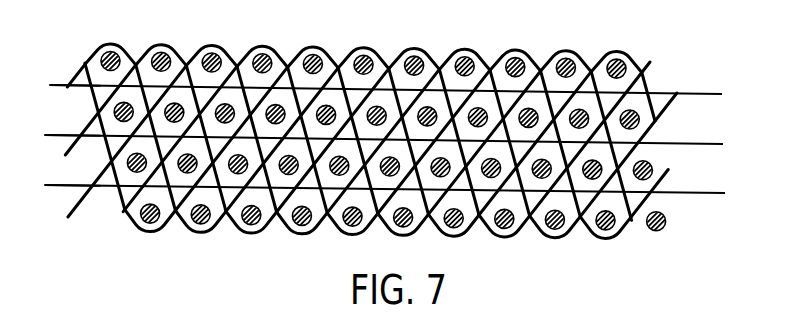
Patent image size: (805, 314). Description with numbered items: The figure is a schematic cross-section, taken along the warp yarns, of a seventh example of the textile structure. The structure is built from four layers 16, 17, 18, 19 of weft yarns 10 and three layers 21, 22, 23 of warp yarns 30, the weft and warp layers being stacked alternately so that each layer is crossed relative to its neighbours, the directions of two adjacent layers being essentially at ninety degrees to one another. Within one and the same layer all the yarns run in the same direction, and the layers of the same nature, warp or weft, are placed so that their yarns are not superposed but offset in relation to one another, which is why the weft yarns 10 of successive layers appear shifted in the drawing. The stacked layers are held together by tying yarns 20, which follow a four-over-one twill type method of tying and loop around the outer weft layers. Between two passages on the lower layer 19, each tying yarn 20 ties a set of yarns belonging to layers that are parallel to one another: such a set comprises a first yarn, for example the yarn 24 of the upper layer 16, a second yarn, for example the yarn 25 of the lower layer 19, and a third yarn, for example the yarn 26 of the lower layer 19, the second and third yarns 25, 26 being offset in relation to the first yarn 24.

The weft yarn 10 is at (568, 58).
The weft yarn layer 16 is at (640, 77).
The weft yarn layer 17 is at (642, 120).
The weft yarn layer 18 is at (651, 170).
The weft yarn layer 19 is at (665, 219).
The tying yarn 20 is at (313, 47).
The warp yarn layer 21 is at (708, 90).
The warp yarn layer 22 is at (703, 140).
The warp yarn layer 23 is at (712, 188).
The first yarn 24 is at (370, 47).
The second yarn 25 is at (416, 231).
The third yarn 26 is at (243, 231).
The warp yarn 30 is at (50, 85).